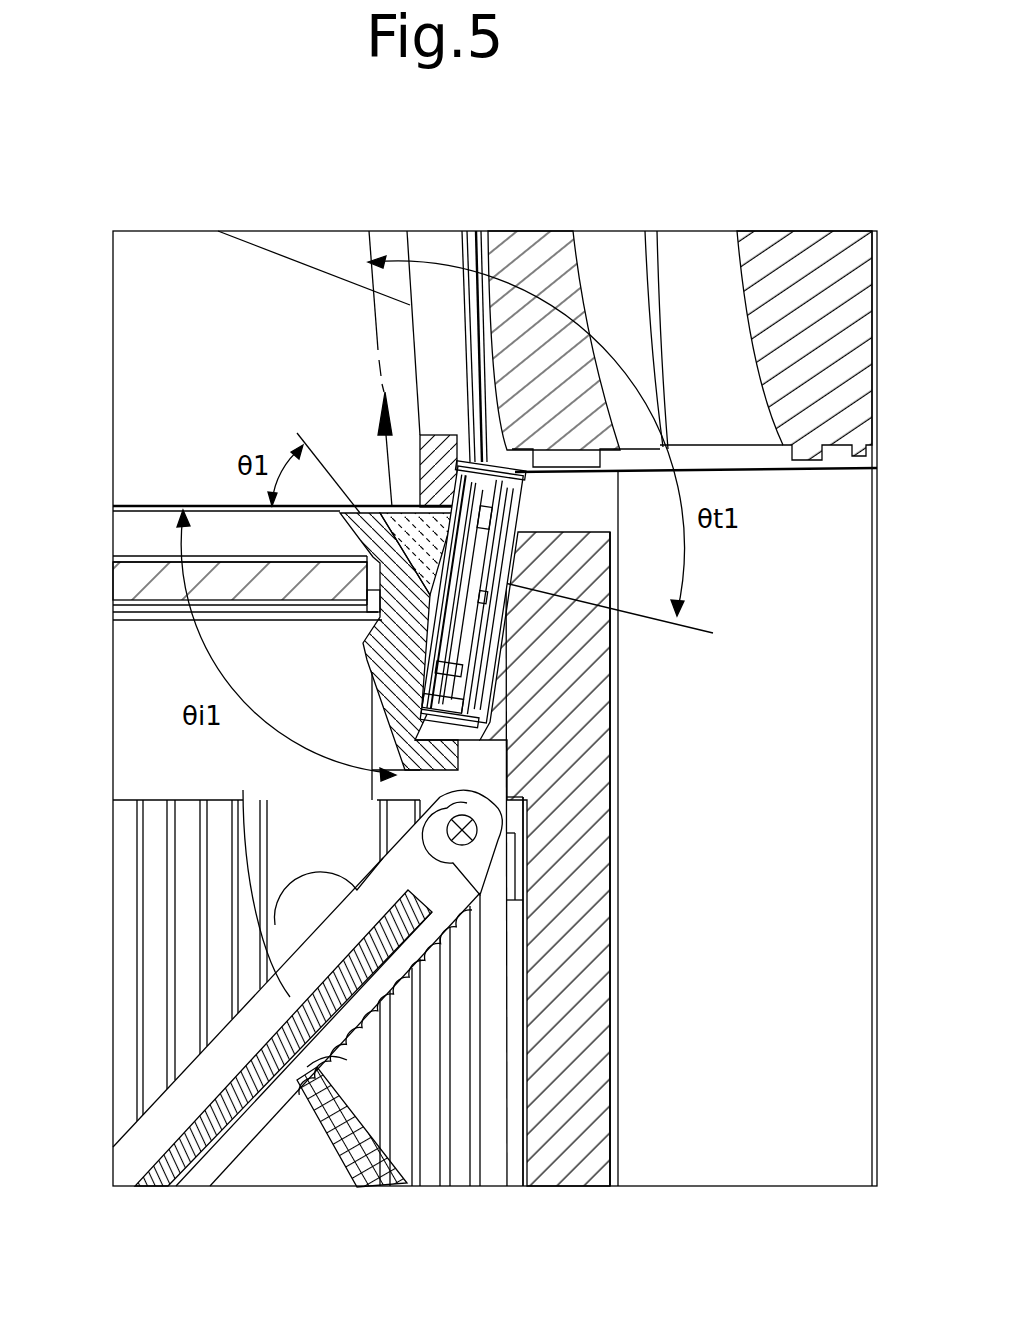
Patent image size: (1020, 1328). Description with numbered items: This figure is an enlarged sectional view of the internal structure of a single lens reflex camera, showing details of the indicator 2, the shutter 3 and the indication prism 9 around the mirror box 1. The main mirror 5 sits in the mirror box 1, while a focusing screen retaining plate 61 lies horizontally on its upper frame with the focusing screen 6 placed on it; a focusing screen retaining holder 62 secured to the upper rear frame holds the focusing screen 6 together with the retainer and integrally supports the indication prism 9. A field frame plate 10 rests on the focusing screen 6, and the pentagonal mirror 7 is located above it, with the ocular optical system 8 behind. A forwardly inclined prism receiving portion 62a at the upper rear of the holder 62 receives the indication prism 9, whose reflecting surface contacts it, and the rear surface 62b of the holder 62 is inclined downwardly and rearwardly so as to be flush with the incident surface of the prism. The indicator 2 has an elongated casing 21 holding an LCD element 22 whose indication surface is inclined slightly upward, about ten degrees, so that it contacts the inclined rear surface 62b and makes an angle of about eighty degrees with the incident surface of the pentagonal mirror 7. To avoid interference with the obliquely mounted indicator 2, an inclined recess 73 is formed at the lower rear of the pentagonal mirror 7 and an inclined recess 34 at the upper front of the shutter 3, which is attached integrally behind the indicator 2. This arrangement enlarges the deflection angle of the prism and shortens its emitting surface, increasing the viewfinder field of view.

The mirror box 1 is at (460, 1163).
The indicator 2 is at (533, 516).
The shutter 3 is at (580, 1027).
The main mirror 5 is at (217, 1187).
The focusing screen 6 is at (128, 583).
The pentagonal mirror 7 is at (432, 248).
The ocular optical system 8 is at (686, 253).
The indication prism 9 is at (445, 437).
The field frame plate 10 is at (130, 506).
The casing 21 is at (480, 633).
The LCD element 22 is at (480, 686).
The inclined recess 34 is at (505, 575).
The focusing screen retaining plate 61 is at (130, 613).
The focusing screen retaining holder 62 is at (367, 648).
The prism receiving portion 62a is at (373, 505).
The rear surface 62b is at (480, 740).
The inclined recess 73 is at (547, 400).